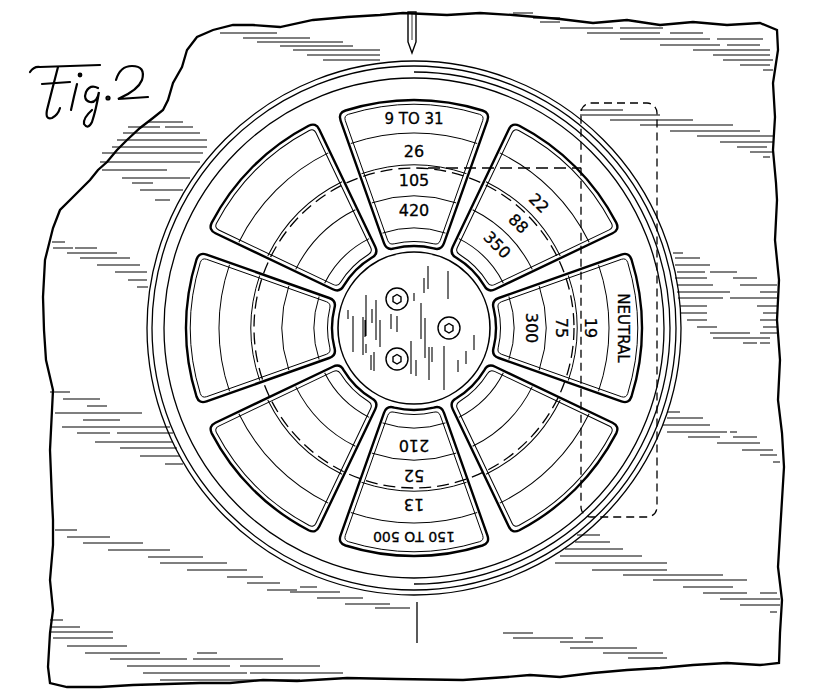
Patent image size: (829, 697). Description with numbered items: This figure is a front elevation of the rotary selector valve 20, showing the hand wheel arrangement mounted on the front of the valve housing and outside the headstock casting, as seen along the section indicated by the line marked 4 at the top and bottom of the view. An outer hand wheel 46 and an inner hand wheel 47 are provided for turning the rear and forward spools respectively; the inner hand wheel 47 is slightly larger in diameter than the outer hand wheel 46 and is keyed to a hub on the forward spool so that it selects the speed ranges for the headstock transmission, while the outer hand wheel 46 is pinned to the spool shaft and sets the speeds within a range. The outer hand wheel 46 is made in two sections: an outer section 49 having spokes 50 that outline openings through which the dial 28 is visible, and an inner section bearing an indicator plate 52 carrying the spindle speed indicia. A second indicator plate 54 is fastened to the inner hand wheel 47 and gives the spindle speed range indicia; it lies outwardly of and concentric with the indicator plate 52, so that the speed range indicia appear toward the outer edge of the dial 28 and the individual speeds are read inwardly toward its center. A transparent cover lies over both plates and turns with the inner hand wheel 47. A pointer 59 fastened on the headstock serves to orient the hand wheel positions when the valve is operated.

The pointer 59 is at (406, 31).
The section line 4- 4 is at (425, 38).
The inner hand wheel 47 is at (544, 88).
The outer hand wheel 46 is at (634, 193).
The indicator plate 54 is at (272, 166).
The rotary selector valve 20 is at (243, 290).
The dial 28 is at (193, 345).
The outer section 49 is at (645, 378).
The indicator plate 52 is at (280, 443).
The spokes 50 is at (582, 468).